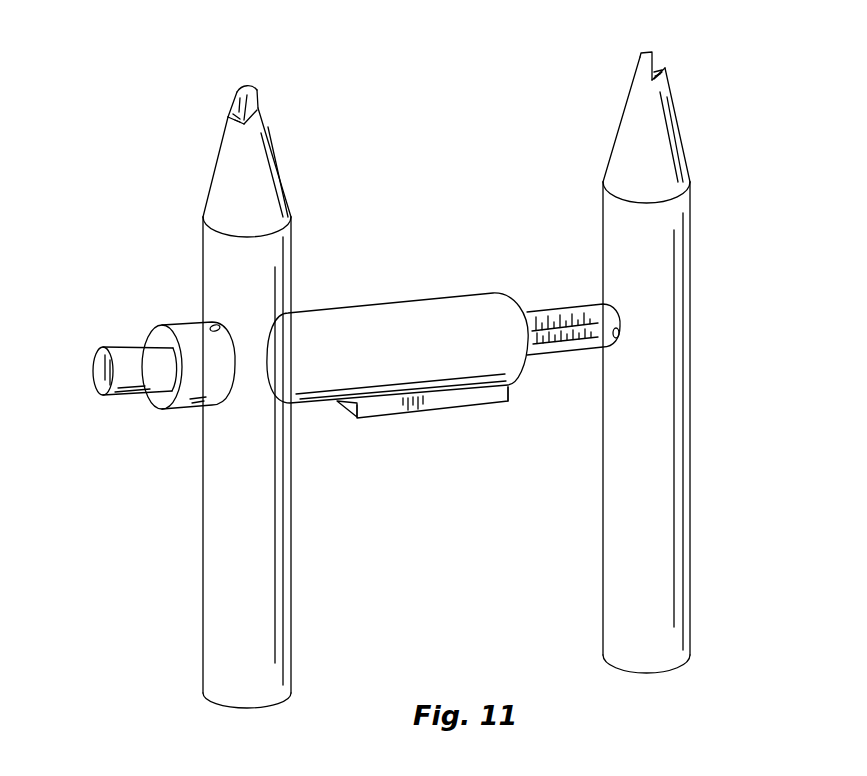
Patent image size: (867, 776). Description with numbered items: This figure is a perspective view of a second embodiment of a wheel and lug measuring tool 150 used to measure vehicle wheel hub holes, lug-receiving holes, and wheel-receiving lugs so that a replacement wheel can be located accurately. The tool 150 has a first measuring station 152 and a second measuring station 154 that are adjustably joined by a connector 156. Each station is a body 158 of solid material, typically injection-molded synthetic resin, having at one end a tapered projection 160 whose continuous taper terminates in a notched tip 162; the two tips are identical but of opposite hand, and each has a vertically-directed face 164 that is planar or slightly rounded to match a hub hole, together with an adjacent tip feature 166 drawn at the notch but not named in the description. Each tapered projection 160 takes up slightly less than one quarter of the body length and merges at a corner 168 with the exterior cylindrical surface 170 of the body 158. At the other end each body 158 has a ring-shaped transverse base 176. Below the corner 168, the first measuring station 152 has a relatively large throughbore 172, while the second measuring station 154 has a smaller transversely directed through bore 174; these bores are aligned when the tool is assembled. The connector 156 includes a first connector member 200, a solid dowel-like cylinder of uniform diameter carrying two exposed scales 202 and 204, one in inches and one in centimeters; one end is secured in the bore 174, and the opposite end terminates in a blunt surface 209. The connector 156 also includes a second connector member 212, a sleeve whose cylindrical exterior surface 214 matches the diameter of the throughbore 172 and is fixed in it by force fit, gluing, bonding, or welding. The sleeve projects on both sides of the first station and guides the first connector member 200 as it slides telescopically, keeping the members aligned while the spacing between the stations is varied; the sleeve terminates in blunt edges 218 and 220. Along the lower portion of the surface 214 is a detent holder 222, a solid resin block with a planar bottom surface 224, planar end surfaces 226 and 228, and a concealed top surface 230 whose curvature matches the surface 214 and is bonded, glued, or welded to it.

The tool 150 is at (541, 172).
The first measuring station 152 is at (227, 78).
The second measuring station 154 is at (698, 107).
The connector 156 is at (548, 285).
The body 158 is at (220, 542).
The tapered projection 160 is at (257, 175).
The notched tip 162 is at (247, 90).
The vertically-directed face 164 is at (260, 110).
The bevel face 166 is at (233, 113).
The corner 168 is at (287, 230).
The exterior cylindrical surface 170 is at (263, 461).
The throughbore 172 is at (218, 326).
The through bore 174 is at (618, 335).
The transverse base 176 is at (277, 703).
The first connector member 200 is at (580, 347).
The scale 202 is at (580, 312).
The scale 204 is at (560, 340).
The blunt surface 209 is at (100, 367).
The second connector member 212 is at (397, 336).
The cylindrical exterior surface 214 is at (392, 366).
The blunt edge 218 is at (518, 302).
The blunt edge 220 is at (158, 333).
The detent holder 222 is at (402, 419).
The bottom surface 224 is at (455, 412).
The end surface 226 is at (350, 407).
The end surface 228 is at (510, 398).
The top surface 230 is at (417, 397).